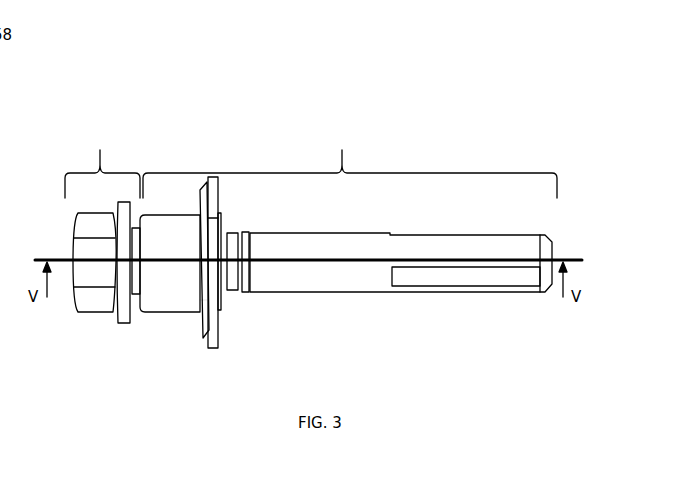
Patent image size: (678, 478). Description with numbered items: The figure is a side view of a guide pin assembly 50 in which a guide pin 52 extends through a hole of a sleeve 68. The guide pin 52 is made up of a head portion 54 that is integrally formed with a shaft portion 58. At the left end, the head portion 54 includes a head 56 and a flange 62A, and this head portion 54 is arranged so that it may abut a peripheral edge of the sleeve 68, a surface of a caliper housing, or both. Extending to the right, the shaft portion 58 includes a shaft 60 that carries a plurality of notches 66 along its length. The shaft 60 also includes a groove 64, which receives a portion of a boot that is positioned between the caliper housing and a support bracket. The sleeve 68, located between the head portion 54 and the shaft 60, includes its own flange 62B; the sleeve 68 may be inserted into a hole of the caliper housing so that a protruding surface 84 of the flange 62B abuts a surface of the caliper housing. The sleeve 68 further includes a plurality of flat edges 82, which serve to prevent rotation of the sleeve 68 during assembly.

The guide pin assembly 50 is at (458, 82).
The guide pin 52 is at (510, 310).
The head portion 54 is at (102, 159).
The head 56 is at (88, 250).
The shaft portion 58 is at (350, 160).
The shaft 60 is at (303, 283).
The flange 62A is at (126, 324).
The flange 62B is at (206, 330).
The groove 64 is at (236, 289).
The notches 66 is at (458, 276).
The sleeve 68 is at (168, 320).
The flat edges 82 is at (212, 294).
The protruding surface 84 is at (205, 333).